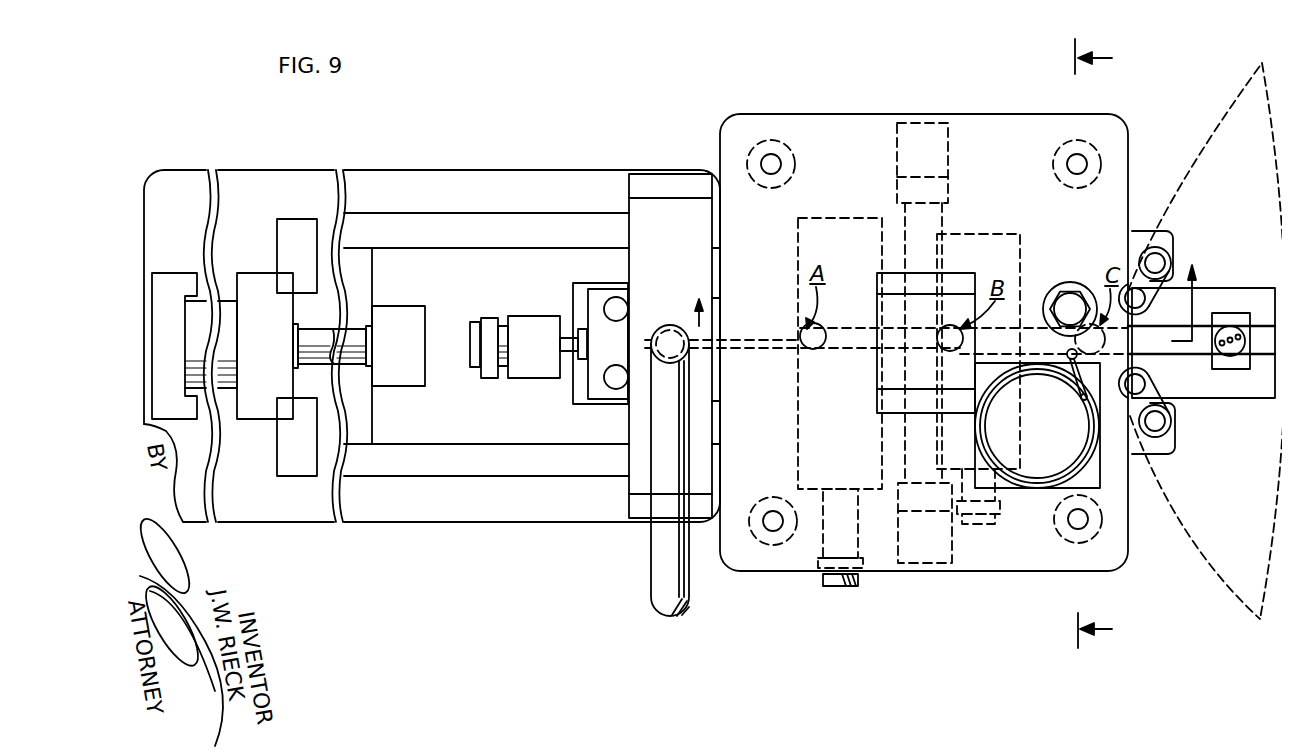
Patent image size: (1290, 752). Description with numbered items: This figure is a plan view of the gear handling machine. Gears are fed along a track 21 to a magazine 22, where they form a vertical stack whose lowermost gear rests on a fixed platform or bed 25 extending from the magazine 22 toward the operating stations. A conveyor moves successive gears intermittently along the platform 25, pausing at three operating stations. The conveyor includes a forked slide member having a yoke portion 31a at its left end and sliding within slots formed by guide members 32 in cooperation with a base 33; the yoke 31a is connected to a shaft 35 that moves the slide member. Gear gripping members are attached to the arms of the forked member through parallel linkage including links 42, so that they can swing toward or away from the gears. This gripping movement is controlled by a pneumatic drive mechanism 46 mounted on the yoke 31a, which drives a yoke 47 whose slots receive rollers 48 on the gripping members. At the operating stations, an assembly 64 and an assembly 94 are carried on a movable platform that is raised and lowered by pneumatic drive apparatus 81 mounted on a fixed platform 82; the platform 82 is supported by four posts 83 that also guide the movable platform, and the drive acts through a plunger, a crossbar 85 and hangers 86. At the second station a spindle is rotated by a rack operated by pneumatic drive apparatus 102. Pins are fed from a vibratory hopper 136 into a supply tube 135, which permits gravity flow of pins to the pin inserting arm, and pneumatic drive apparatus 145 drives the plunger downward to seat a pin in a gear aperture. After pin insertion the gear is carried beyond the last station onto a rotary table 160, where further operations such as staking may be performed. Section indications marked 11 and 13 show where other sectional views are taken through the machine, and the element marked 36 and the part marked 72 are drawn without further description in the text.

The base 33 is at (452, 179).
The guide members 32 is at (500, 232).
The shaft 35 is at (320, 333).
The threaded shaft 36 is at (222, 353).
The yoke portion 31a is at (403, 418).
The pneumatic drive mechanism 46 is at (548, 292).
The yoke 47 is at (600, 365).
The rollers 48 is at (612, 390).
The magazine 22 is at (660, 328).
The track 21 is at (665, 552).
The section line 11- 11 is at (950, 290).
The fixed platform or bed 25 is at (757, 350).
The fixed platform 82 is at (1000, 137).
The posts 83 is at (790, 151).
The assembly 64 is at (798, 262).
The assembly 94 is at (1020, 262).
The hangers 86 is at (950, 195).
The crossbar 85 is at (905, 440).
The pneumatic drive apparatus 81 is at (895, 316).
The bracket 72 is at (822, 535).
The pneumatic drive apparatus 102 is at (982, 527).
The vibratory hopper 136 is at (1037, 467).
The supply tube 135 is at (1072, 362).
The pneumatic drive apparatus 145 is at (1068, 302).
The links 42 is at (1140, 256).
The rotary table 160 is at (1213, 600).
The section line 13- 13 is at (1108, 343).